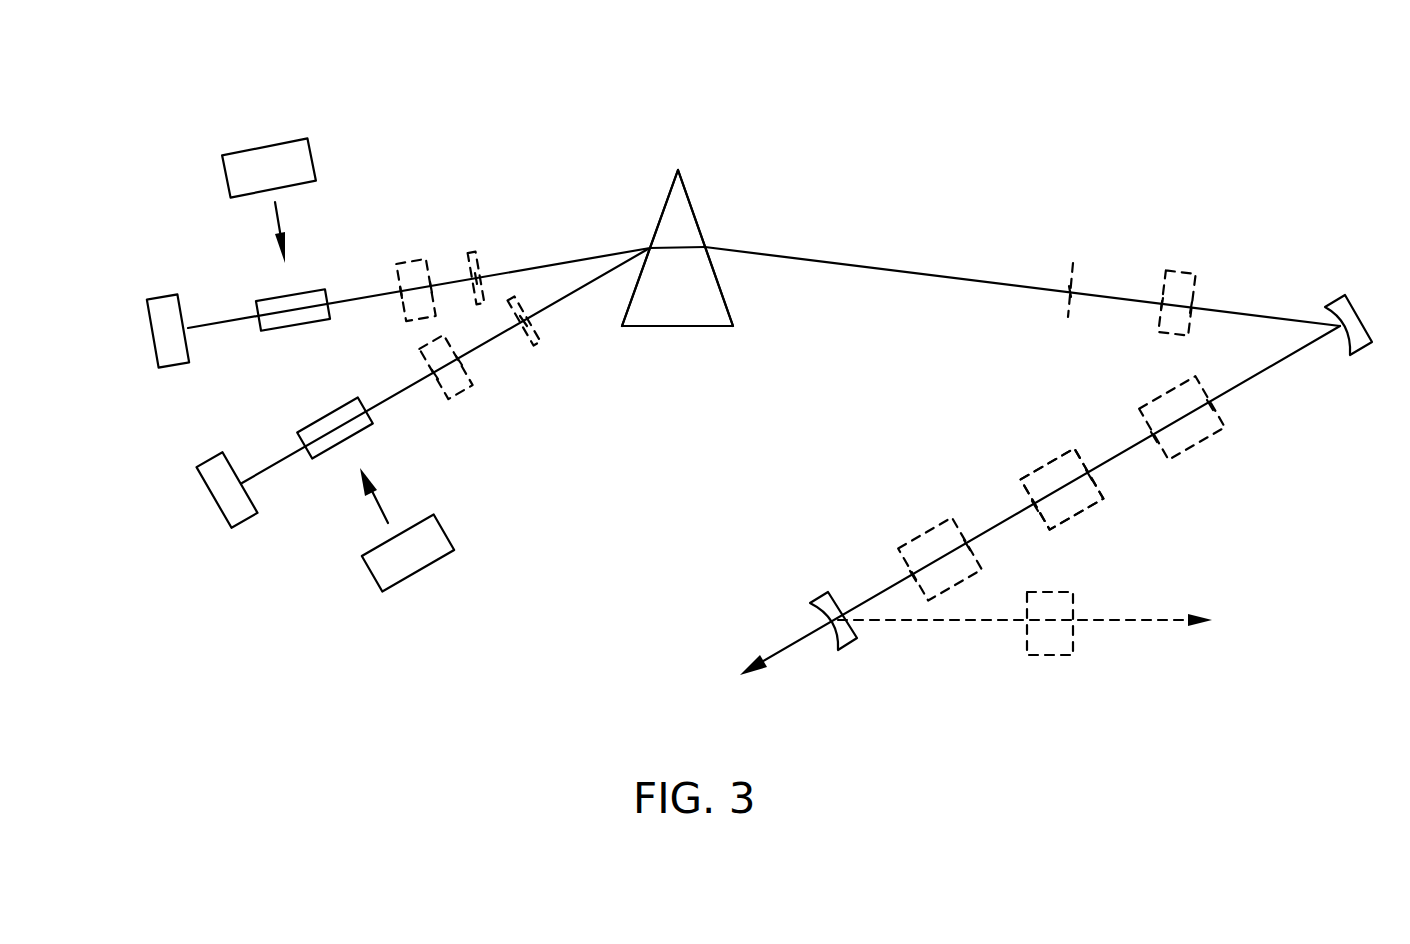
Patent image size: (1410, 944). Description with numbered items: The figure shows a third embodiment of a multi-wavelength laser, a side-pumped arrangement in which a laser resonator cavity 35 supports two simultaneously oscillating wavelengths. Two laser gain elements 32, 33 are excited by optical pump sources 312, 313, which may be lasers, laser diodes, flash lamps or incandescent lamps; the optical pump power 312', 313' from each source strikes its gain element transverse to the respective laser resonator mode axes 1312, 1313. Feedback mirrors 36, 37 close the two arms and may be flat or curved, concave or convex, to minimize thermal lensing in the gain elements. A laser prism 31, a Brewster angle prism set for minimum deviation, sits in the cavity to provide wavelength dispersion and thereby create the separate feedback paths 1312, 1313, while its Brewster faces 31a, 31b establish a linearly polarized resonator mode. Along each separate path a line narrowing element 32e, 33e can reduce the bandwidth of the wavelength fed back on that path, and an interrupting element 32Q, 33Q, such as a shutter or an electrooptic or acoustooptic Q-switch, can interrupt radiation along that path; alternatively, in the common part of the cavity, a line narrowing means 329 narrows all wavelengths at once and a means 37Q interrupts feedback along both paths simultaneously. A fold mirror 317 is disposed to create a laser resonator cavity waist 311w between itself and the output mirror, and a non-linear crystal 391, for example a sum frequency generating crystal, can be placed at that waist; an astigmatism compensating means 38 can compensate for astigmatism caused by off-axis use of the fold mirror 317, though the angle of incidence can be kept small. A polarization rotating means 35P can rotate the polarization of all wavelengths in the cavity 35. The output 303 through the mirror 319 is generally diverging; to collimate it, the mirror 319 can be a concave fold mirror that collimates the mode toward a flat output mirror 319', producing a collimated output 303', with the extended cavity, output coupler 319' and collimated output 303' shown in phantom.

The laser prism 31 is at (682, 208).
The Brewster face of prism 31a is at (682, 208).
The Brewster face of prism 31b is at (705, 235).
The laser gain element 32 is at (277, 293).
The interrupting means (shutter or Q-switch) 32Q is at (430, 255).
The line narrowing element 32e is at (475, 250).
The laser gain element 33 is at (327, 413).
The interrupting means 33Q is at (465, 392).
The line narrowing element 33e is at (533, 338).
The laser resonator cavity 35 is at (997, 153).
The polarization rotating means 35P is at (1213, 448).
The feedback mirror 36 is at (158, 298).
The feedback mirror 37 is at (208, 460).
The interrupting means 37Q is at (1190, 270).
The astigmatism compensating means 38 is at (918, 528).
The output 303 is at (1008, 509).
The collimated output 303' is at (1065, 624).
The laser resonator cavity waist 311w is at (1053, 490).
The optical pump source 312 is at (238, 134).
The optical pump power 312' is at (211, 230).
The optical pump source 313 is at (342, 569).
The optical pump power 313' is at (478, 495).
The fold mirror 317 is at (1328, 303).
The mirror (output or concave fold mirror) 319 is at (881, 647).
The output mirror (output coupler) 319' is at (1087, 662).
The line narrowing means 329 is at (1075, 267).
The non-linear crystal 391 is at (1083, 517).
The laser resonator mode axis / feedback path 1312 is at (372, 295).
The laser resonator mode axis / feedback path 1313 is at (405, 392).